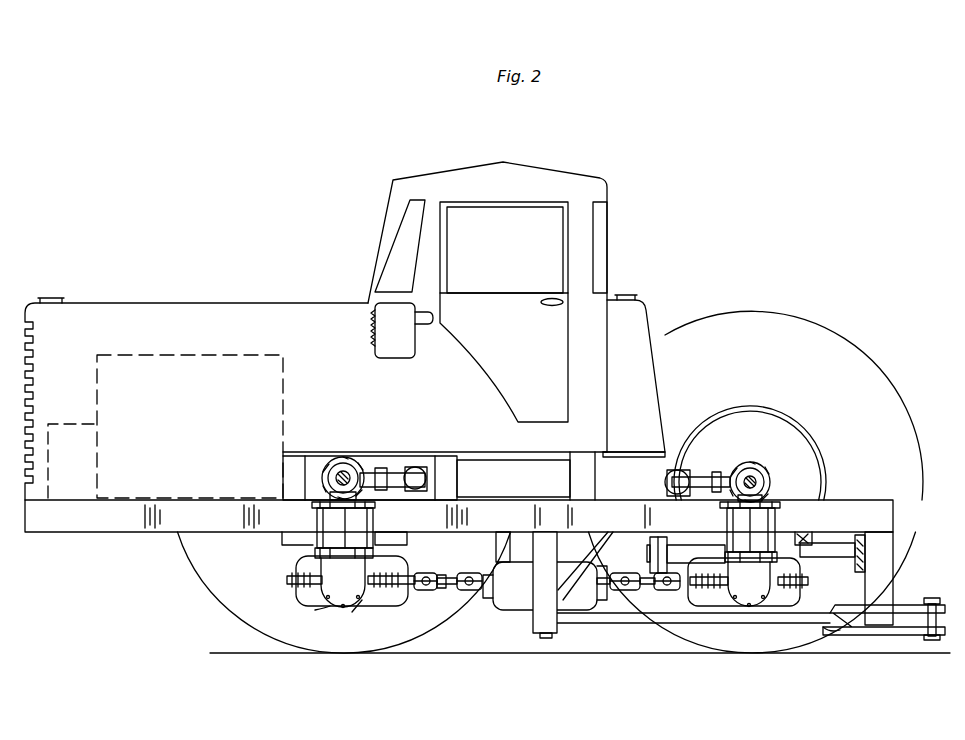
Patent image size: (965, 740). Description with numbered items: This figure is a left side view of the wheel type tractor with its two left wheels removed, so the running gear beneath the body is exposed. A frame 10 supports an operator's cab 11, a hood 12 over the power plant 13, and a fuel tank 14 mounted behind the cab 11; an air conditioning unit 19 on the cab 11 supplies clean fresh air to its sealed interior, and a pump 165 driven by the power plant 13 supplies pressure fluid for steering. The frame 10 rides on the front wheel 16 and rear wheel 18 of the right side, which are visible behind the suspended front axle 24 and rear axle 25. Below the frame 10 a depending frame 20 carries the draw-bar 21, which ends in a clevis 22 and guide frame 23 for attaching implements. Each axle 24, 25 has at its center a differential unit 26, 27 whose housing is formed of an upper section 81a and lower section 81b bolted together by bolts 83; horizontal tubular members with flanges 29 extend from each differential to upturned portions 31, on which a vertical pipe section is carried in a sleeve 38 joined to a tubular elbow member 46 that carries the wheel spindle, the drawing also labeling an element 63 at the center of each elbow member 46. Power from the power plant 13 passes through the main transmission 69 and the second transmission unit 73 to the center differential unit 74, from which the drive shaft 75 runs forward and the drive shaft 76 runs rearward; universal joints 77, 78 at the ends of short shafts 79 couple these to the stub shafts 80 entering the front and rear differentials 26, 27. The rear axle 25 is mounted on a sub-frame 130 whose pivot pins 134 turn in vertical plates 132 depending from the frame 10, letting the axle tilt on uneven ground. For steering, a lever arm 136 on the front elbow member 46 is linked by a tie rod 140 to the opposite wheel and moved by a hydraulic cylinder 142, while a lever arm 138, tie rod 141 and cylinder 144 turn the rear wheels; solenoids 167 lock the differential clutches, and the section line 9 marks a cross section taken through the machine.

The section line 9 is at (888, 450).
The frame 10 is at (172, 522).
The operator's cab 11 is at (538, 170).
The hood 12 is at (192, 312).
The power plant 13 is at (258, 413).
The fuel tank 14 is at (643, 388).
The front wheel 16 is at (280, 633).
The rear wheel 18 is at (773, 647).
The air conditioning unit 19 is at (403, 347).
The depending frame 20 is at (540, 620).
The draw-bar 21 is at (628, 620).
The clevis 22 is at (918, 636).
The guide frame 23 is at (882, 580).
The front axle 24 is at (553, 546).
The rear axle 25 is at (748, 603).
The front differential unit 26 is at (299, 598).
The rear differential unit 27 is at (806, 599).
The flange 29 is at (355, 612).
The upturned portion 31 is at (353, 586).
The sleeve 38 is at (340, 523).
The tubular elbow member 46 is at (358, 460).
The axle shaft 63 is at (348, 478).
The main transmission 69 is at (393, 538).
The second transmission unit 73 is at (577, 538).
The center differential unit 74 is at (520, 602).
The drive shaft 75 is at (495, 583).
The drive shaft 76 is at (608, 587).
The universal joint 77 is at (483, 596).
The universal joint 78 is at (433, 590).
The short shaft 79 is at (452, 588).
The stub shaft 80 is at (413, 593).
The upper section 81a is at (377, 568).
The lower section 81b is at (316, 610).
The bolts 83 is at (288, 576).
The sub-frame 130 is at (715, 563).
The vertical plate 132 is at (662, 536).
The pivot pin 134 is at (650, 552).
The lever arm 136 is at (392, 476).
The lever arm 138 is at (700, 476).
The tie rod 140 is at (381, 470).
The tie rod 141 is at (717, 473).
The hydraulic cylinder 142 is at (426, 480).
The hydraulic cylinder 144 is at (672, 482).
The pump 165 is at (58, 438).
The solenoid 167 is at (305, 543).